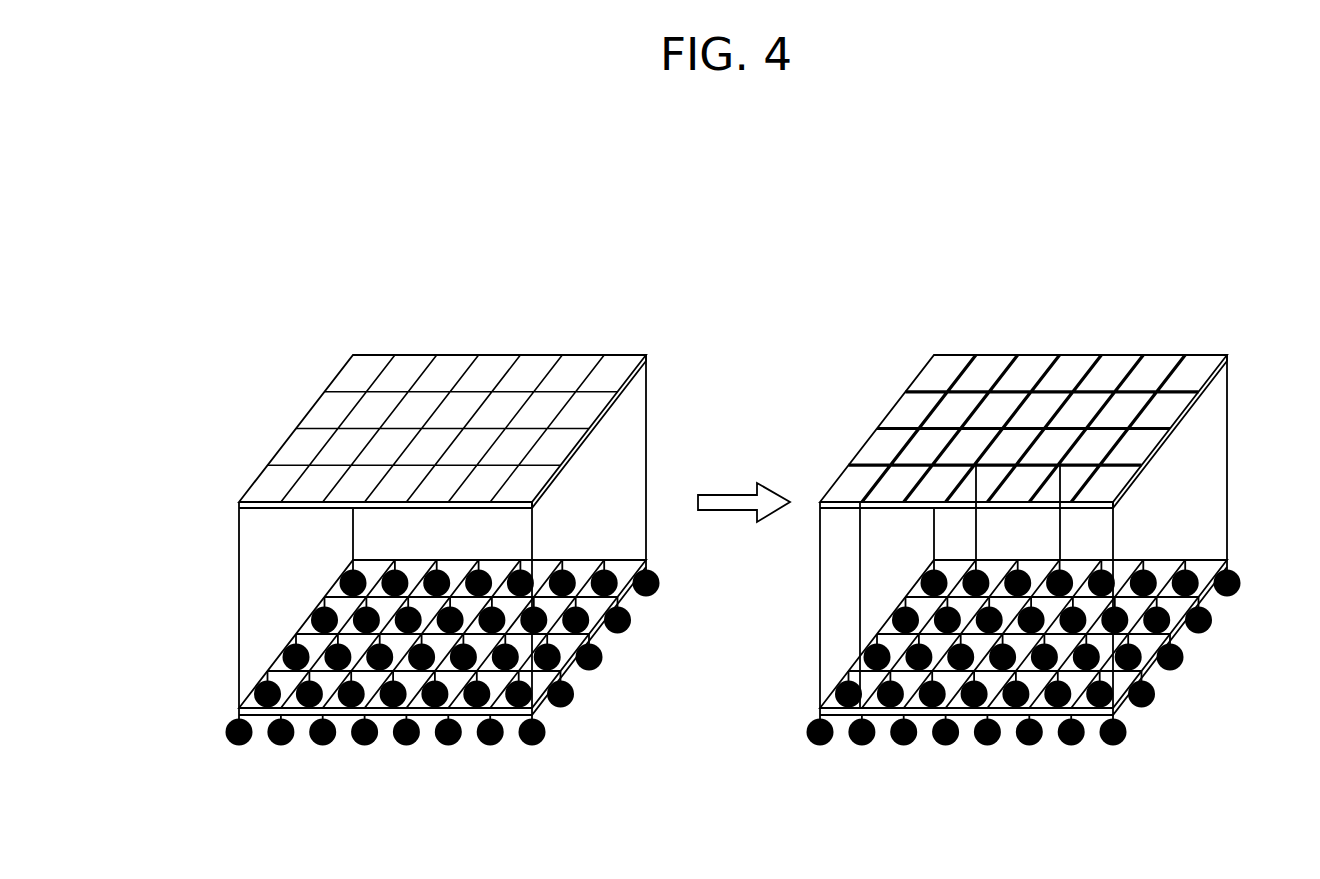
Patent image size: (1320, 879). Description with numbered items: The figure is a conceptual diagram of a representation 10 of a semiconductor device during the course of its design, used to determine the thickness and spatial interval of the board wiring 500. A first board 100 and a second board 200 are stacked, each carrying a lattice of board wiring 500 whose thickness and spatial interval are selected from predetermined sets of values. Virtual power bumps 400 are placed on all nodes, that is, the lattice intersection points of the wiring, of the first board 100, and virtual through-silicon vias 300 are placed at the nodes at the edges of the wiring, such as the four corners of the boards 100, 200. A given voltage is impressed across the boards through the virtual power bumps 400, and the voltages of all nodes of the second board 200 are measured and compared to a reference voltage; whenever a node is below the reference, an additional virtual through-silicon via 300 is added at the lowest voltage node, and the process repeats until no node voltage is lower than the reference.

The representation of the device 10 is at (727, 262).
The first board 100 is at (239, 709).
The second board 200 is at (239, 503).
The virtual through-silicon via 300 is at (860, 602).
The virtual power bumps 400 is at (532, 750).
The board wiring 500 is at (1042, 423).